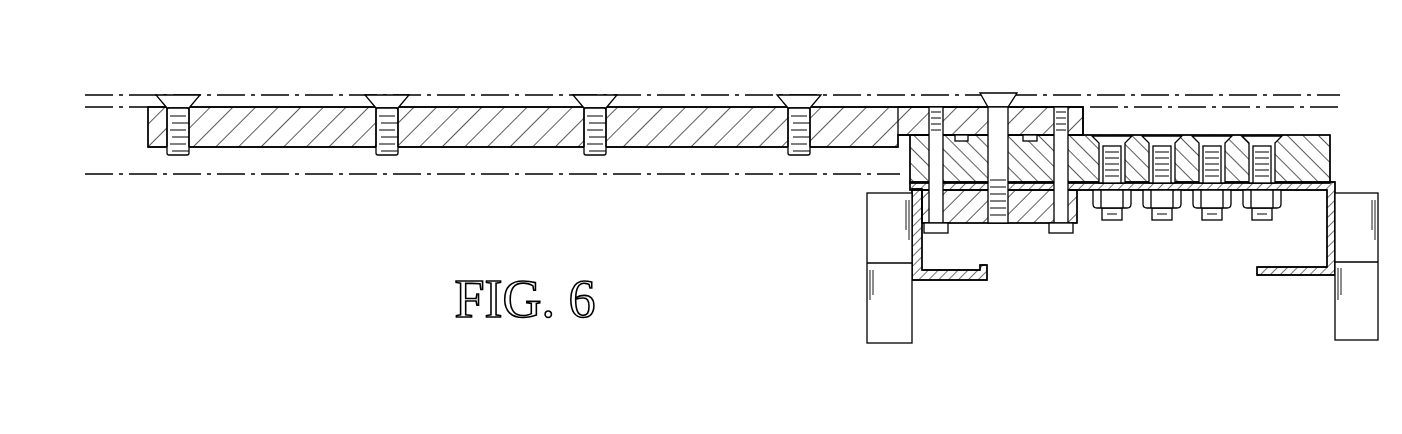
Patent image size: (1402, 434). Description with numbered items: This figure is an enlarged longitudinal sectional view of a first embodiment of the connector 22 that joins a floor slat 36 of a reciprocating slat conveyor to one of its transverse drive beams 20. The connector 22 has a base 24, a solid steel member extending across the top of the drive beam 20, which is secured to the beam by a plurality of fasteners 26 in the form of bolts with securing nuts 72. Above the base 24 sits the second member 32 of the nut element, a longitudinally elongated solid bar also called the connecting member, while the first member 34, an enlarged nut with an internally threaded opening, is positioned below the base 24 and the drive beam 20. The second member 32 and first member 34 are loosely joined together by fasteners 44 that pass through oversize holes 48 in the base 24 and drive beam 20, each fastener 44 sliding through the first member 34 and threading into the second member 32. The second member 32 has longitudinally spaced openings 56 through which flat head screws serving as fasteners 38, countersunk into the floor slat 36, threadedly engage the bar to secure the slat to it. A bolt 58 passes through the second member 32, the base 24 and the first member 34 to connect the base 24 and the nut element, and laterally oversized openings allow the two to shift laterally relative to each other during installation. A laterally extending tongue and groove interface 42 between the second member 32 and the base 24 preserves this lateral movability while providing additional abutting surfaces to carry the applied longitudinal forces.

The drive beam 20 is at (987, 268).
The connector 22 is at (1142, 118).
The base 24 is at (900, 177).
The fasteners 26 is at (1111, 230).
The second member 32 is at (673, 137).
The first member 34 is at (1035, 226).
The floor slat 36 is at (1083, 104).
The fasteners 38 is at (178, 95).
The tongue and groove interface 42 is at (962, 133).
The fasteners 44 is at (947, 233).
The oversize holes 48 is at (923, 140).
The openings 56 is at (170, 155).
The bolt 58 is at (1000, 110).
The securing nuts 72 is at (1130, 208).